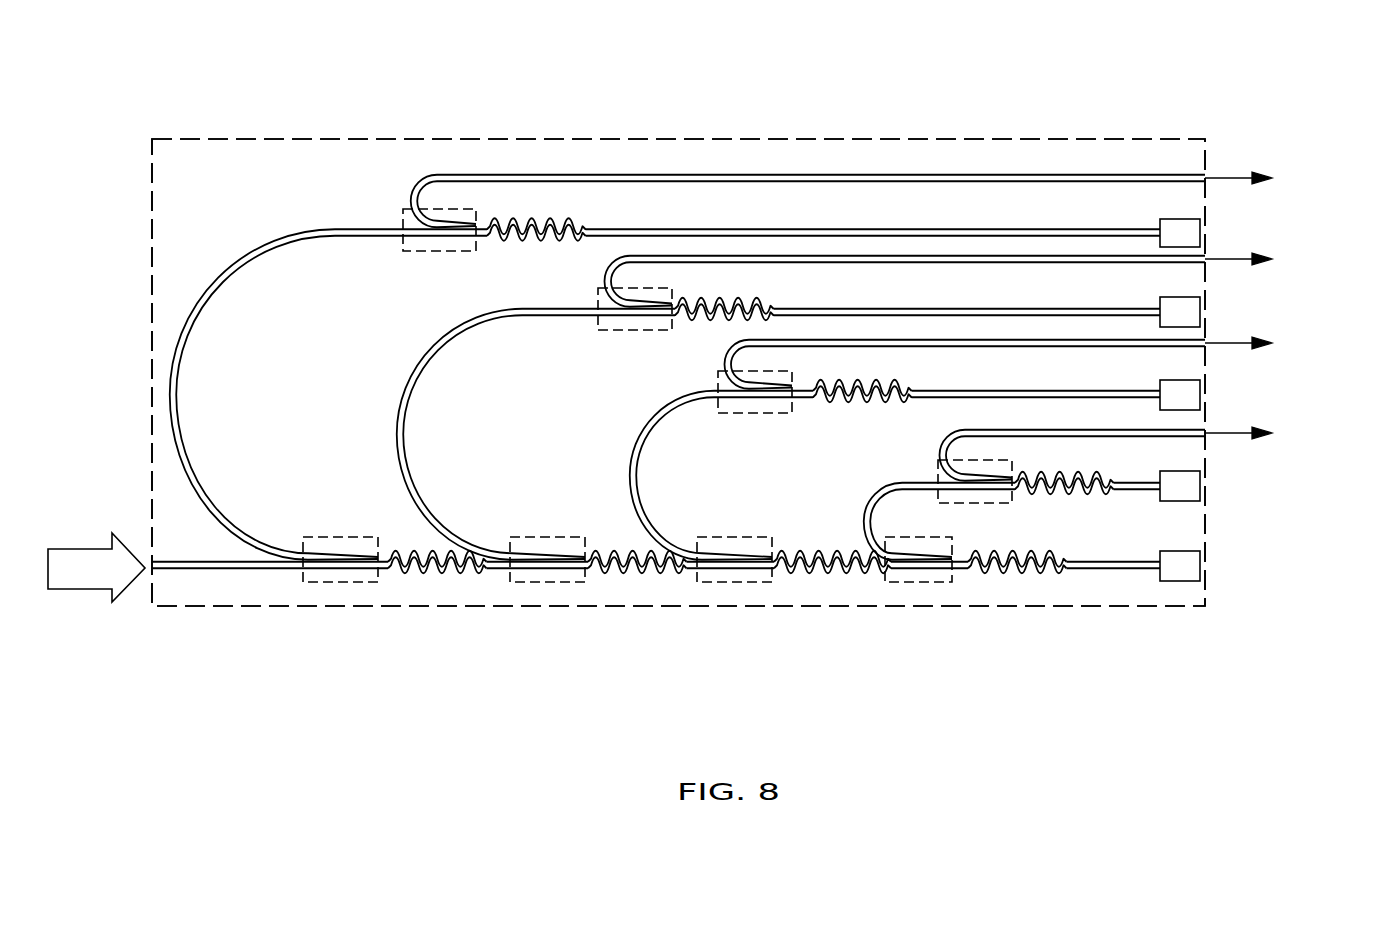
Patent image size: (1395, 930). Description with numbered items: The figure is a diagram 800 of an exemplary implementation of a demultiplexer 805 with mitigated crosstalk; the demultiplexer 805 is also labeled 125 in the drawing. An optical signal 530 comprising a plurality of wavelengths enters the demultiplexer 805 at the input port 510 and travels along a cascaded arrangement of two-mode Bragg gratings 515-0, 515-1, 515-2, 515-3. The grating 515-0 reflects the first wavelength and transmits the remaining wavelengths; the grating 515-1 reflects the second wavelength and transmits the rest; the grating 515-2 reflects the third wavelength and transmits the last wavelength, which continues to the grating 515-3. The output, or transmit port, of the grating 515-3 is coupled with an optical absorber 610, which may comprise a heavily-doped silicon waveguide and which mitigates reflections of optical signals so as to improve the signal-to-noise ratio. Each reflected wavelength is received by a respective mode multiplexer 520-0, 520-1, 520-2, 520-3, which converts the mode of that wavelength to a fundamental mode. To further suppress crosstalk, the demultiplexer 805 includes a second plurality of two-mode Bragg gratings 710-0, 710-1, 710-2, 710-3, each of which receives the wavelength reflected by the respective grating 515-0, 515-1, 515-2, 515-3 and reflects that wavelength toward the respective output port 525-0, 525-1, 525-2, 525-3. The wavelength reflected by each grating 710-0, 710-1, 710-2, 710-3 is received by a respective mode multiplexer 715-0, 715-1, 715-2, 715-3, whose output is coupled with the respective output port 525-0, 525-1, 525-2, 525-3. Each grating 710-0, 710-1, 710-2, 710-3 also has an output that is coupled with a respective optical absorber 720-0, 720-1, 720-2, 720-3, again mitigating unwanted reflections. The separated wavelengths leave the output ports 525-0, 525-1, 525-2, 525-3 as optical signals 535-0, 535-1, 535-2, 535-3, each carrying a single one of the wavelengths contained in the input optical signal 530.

The diagram 800 is at (1310, 82).
The demultiplexer 805 is at (1043, 139).
The photonic integrated circuit chip 125 is at (678, 372).
The optical signal 530 is at (80, 590).
The input port 510 is at (197, 570).
The mode multiplexer 520-0 is at (344, 583).
The mode multiplexer 520-1 is at (532, 583).
The mode multiplexer 520-2 is at (735, 583).
The mode multiplexer 520-3 is at (920, 583).
The grating 515-0 is at (437, 574).
The grating 515-1 is at (636, 574).
The grating 515-2 is at (830, 574).
The grating 515-3 is at (1020, 574).
The optical absorber 610 is at (1182, 583).
The mode multiplexer 715-0 is at (440, 251).
The mode multiplexer 715-1 is at (635, 330).
The mode multiplexer 715-2 is at (755, 413).
The mode multiplexer 715-3 is at (965, 503).
The grating 710-0 is at (537, 222).
The grating 710-1 is at (722, 300).
The grating 710-2 is at (858, 384).
The grating 710-3 is at (1058, 491).
The output port 525-0 is at (1068, 183).
The output port 525-1 is at (1118, 264).
The output port 525-2 is at (1148, 348).
The output port 525-3 is at (1173, 438).
The optical signal 535-0 is at (1265, 181).
The optical signal 535-1 is at (1265, 262).
The optical signal 535-2 is at (1265, 346).
The optical signal 535-3 is at (1265, 436).
The optical absorber 720-0 is at (1200, 233).
The optical absorber 720-1 is at (1200, 312).
The optical absorber 720-2 is at (1200, 394).
The optical absorber 720-3 is at (1200, 486).